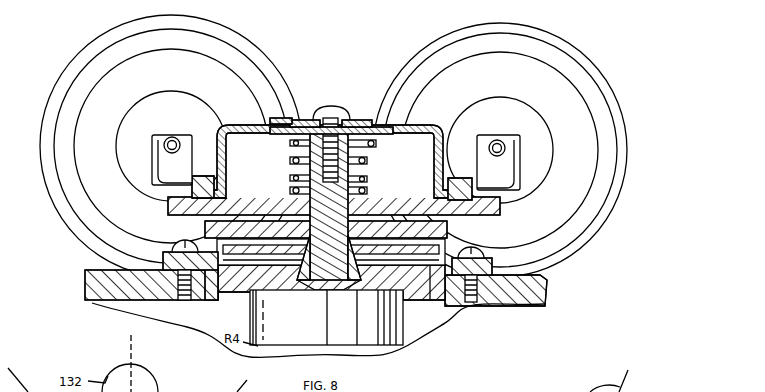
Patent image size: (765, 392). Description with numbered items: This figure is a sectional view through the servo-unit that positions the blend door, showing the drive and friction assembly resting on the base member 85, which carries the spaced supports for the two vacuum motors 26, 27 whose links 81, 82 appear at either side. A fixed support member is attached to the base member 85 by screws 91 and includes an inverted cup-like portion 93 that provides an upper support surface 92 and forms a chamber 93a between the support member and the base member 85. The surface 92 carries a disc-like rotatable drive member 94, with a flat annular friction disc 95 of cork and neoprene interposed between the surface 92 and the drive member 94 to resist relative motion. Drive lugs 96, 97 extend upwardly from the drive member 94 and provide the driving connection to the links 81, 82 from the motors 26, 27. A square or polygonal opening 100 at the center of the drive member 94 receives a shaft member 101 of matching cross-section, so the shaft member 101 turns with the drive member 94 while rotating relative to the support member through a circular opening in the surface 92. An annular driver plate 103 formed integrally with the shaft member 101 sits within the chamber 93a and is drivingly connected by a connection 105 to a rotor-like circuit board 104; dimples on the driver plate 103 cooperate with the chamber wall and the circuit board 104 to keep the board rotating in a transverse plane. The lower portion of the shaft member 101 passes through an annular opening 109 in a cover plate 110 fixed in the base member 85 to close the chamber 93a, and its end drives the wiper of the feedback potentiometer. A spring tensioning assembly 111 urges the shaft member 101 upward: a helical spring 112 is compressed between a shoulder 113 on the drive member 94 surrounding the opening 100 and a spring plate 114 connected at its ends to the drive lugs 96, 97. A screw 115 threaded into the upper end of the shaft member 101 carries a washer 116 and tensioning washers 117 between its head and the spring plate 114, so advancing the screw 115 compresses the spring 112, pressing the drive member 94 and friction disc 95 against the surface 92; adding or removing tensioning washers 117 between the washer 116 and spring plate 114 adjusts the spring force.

The vacuum motor 26 is at (578, 138).
The vacuum motor 27 is at (80, 137).
The link 81 is at (505, 177).
The link 82 is at (163, 183).
The base member 85 is at (546, 291).
The screws 91 is at (172, 243).
The upper support surface 92 is at (208, 212).
The inverted cup-like portion 93 is at (450, 227).
The chamber 93a is at (458, 244).
The rotatable drive member 94 is at (256, 197).
The friction disc 95 is at (392, 206).
The drive lug 96 is at (210, 175).
The drive lug 97 is at (468, 161).
The polygonal opening 100 is at (297, 191).
The shaft member 101 is at (298, 165).
The annular driver plate 103 is at (215, 229).
The rotor-like circuit board 104 is at (234, 285).
The connection 105 is at (213, 296).
The annular opening 109 is at (289, 292).
The cover plate 110 is at (440, 299).
The spring tensioning assembly 111 is at (271, 116).
The helical spring 112 is at (366, 161).
The shoulder 113 is at (365, 193).
The spring plate 114 is at (409, 139).
The screw 115 is at (330, 106).
The washer 116 is at (297, 121).
The tensioning washers 117 is at (364, 121).